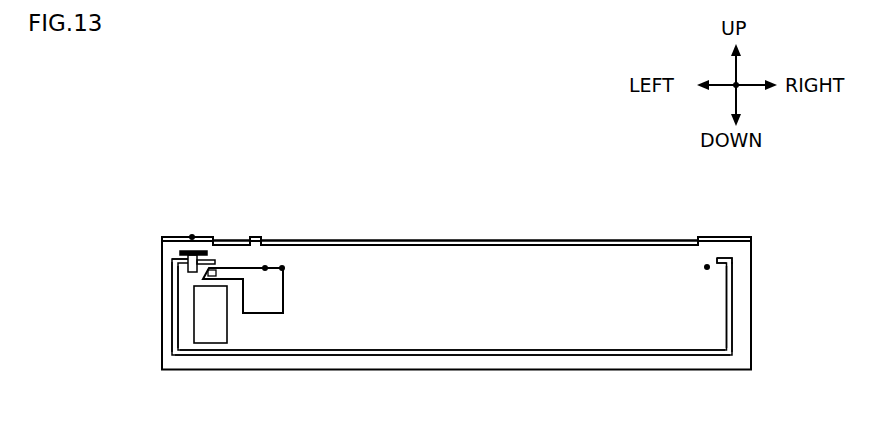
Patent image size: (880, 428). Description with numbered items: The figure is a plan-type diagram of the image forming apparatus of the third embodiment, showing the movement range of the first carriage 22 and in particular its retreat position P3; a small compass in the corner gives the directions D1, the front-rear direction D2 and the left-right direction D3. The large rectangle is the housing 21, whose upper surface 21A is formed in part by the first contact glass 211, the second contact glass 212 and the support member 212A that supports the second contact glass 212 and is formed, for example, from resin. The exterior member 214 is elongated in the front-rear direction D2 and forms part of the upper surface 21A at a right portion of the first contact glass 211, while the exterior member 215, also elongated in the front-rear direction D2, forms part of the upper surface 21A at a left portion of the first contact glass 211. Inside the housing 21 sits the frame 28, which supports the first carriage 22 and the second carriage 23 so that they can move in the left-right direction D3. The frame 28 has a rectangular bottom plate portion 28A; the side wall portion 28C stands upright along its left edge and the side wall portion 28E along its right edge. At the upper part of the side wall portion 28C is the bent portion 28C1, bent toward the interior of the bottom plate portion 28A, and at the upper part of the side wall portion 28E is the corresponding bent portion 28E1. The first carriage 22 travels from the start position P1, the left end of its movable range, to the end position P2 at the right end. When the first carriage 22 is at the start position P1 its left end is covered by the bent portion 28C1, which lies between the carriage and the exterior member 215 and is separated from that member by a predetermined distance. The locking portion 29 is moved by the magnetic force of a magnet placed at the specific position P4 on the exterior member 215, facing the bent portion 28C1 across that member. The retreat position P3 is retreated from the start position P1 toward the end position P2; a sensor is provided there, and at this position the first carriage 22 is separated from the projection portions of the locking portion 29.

The housing 21 is at (108, 169).
The upper surface 21A is at (377, 231).
The first contact glass 211 is at (487, 240).
The second contact glass 212 is at (234, 240).
The support member 212A is at (254, 236).
The exterior member 214 is at (722, 237).
The exterior member 215 is at (173, 236).
The first carriage 22 is at (260, 314).
The second carriage 23 is at (210, 344).
The frame 28 is at (164, 332).
The bottom plate portion 28A is at (462, 349).
The side wall portion 28C is at (172, 298).
The bent portion 28C1 is at (180, 257).
The side wall portion 28E is at (733, 304).
The bent portion 28E1 is at (733, 256).
The locking portion 29 is at (172, 255).
The start position P1 is at (265, 265).
The end position P2 is at (706, 264).
The retreat position P3 is at (285, 268).
The specific position P4 is at (192, 234).
The direction D1 is at (733, 72).
The front-rear direction D2 is at (738, 88).
The left-right direction D3 is at (722, 88).